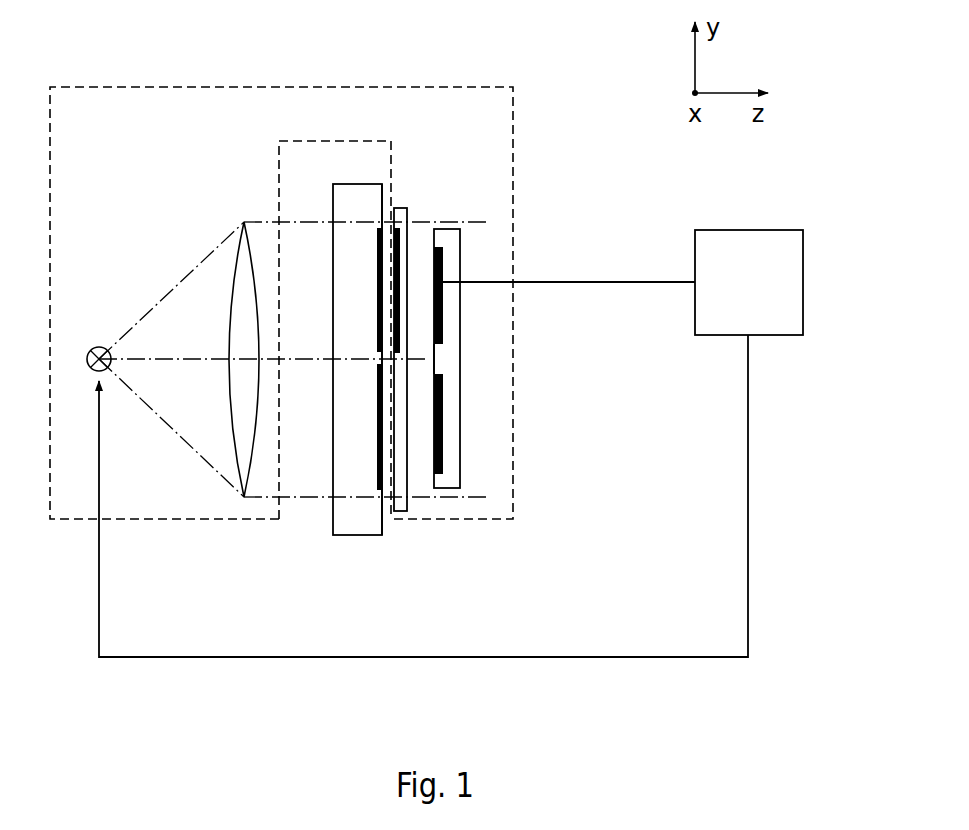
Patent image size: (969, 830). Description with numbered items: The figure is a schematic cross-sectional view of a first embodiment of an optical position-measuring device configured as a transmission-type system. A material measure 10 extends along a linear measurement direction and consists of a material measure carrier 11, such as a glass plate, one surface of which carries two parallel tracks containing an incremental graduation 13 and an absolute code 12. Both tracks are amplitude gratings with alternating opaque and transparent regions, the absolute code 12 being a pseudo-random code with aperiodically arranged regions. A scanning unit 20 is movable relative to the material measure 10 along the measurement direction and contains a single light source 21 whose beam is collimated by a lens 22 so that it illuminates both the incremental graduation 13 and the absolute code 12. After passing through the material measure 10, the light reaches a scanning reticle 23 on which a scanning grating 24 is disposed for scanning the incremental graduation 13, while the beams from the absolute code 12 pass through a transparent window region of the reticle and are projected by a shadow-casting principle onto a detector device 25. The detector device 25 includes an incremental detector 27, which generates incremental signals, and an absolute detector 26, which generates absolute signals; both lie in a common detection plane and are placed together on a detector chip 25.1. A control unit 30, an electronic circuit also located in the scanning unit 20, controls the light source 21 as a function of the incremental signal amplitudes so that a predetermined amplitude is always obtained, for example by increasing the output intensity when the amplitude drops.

The material measure 10 is at (323, 530).
The material measure carrier 11 is at (372, 527).
The absolute code 12 is at (378, 478).
The incremental graduation 13 is at (379, 233).
The scanning unit 20 is at (372, 82).
The light source 21 is at (99, 347).
The lens 22 is at (243, 242).
The scanning reticle 23 is at (404, 505).
The scanning grating 24 is at (399, 242).
The detector device 25 is at (468, 323).
The detector chip 25.1 is at (452, 368).
The absolute detector 26 is at (443, 445).
The incremental detector 27 is at (443, 253).
The control unit 30 is at (742, 235).